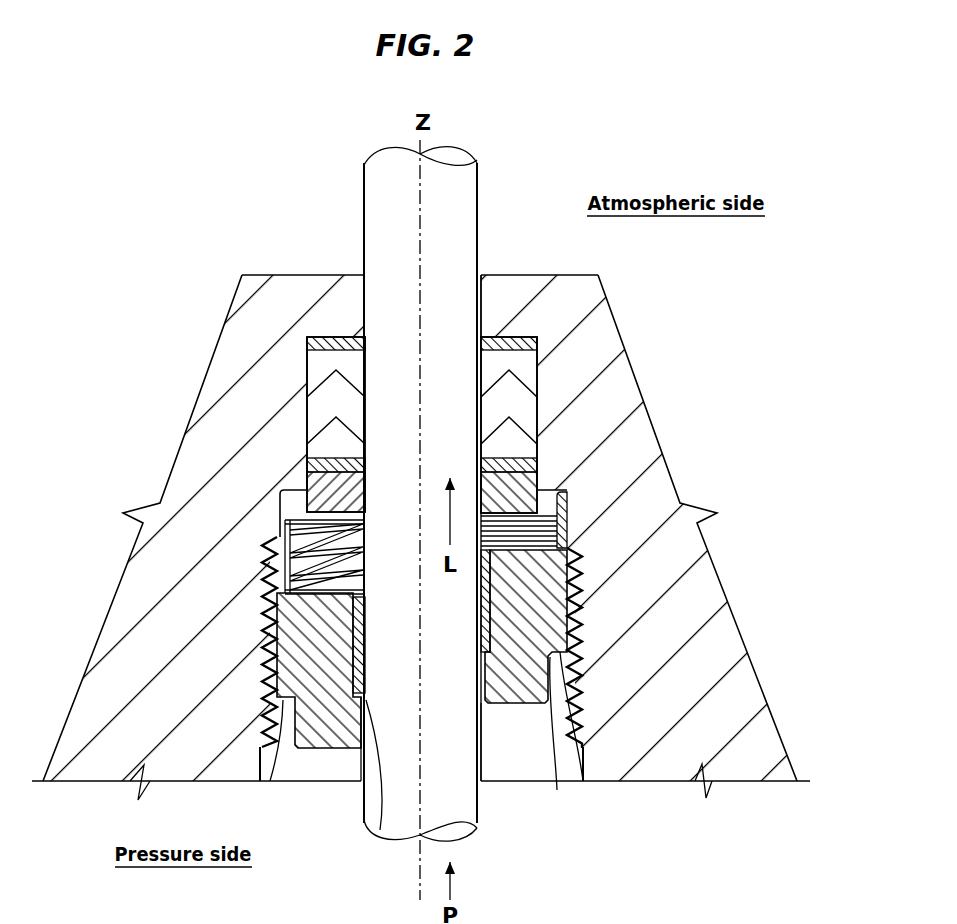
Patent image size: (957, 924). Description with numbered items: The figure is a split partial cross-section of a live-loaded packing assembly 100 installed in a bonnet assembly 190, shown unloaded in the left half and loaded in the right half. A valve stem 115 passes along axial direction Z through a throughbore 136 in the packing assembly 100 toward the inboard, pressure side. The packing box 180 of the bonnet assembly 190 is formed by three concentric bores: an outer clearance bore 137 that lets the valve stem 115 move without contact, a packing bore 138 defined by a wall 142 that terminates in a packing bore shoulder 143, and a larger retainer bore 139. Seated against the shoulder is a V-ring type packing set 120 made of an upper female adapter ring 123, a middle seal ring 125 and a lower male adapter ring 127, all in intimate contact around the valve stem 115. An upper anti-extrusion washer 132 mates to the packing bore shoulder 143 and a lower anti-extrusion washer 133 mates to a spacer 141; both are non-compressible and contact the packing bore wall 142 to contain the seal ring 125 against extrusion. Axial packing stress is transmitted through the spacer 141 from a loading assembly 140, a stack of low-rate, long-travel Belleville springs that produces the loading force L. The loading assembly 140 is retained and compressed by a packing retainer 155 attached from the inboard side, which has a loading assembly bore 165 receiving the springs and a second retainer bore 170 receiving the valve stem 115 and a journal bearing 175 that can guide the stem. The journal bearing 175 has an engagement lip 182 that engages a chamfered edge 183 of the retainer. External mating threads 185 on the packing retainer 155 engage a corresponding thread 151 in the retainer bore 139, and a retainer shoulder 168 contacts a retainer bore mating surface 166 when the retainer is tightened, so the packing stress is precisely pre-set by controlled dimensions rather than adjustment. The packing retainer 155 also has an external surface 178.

The packing assembly 100 is at (217, 237).
The valve stem 115 is at (455, 205).
The packing set 120 is at (268, 377).
The upper female adapter ring 123 is at (303, 357).
The seal ring 125 is at (305, 415).
The lower male adapter ring 127 is at (310, 455).
The upper anti-extrusion washer 132 is at (328, 337).
The lower anti-extrusion washer 133 is at (308, 465).
The throughbore 136 is at (361, 275).
The outer clearance bore 137 is at (488, 300).
The packing bore 138 is at (543, 362).
The retainer bore 139 is at (569, 497).
The loading assembly 140 is at (569, 554).
The spacer 141 is at (522, 485).
The packing bore wall 142 is at (530, 413).
The packing bore shoulder 143 is at (528, 322).
The thread 151 is at (572, 622).
The packing retainer 155 is at (500, 704).
The loading assembly bore 165 is at (322, 596).
The retainer bore mating surface 166 is at (300, 497).
The retainer shoulder 168 is at (286, 527).
The second retainer bore 170 is at (380, 832).
The journal bearing 175 is at (352, 690).
The external surface 178 is at (557, 790).
The packing box 180 is at (562, 386).
The engagement lip 182 is at (283, 702).
The chamfered edge 183 is at (263, 594).
The external mating threads 185 is at (588, 748).
The bonnet assembly 190 is at (87, 768).